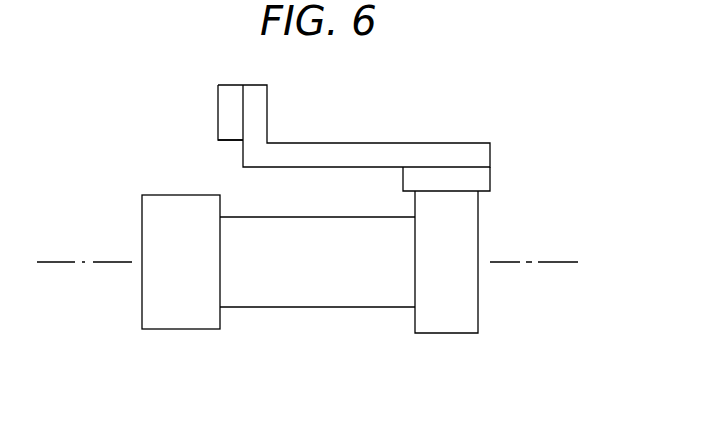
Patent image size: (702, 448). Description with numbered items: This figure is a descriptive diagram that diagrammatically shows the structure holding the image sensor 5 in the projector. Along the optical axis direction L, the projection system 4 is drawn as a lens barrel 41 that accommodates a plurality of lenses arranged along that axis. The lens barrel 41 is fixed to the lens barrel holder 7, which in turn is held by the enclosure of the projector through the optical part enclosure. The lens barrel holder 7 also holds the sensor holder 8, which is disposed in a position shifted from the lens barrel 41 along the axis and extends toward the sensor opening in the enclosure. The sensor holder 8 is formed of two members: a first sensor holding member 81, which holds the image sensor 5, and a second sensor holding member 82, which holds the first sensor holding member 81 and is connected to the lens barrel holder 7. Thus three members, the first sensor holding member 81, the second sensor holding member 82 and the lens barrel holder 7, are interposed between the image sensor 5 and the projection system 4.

The optical axis direction L is at (58, 262).
The projection system 4 is at (278, 295).
The lens barrel 41 is at (270, 311).
The image sensor 5 is at (225, 102).
The lens barrel holder 7 is at (448, 325).
The sensor holder 8 is at (405, 138).
The first sensor holding member 81 is at (487, 153).
The second sensor holding member 82 is at (487, 179).